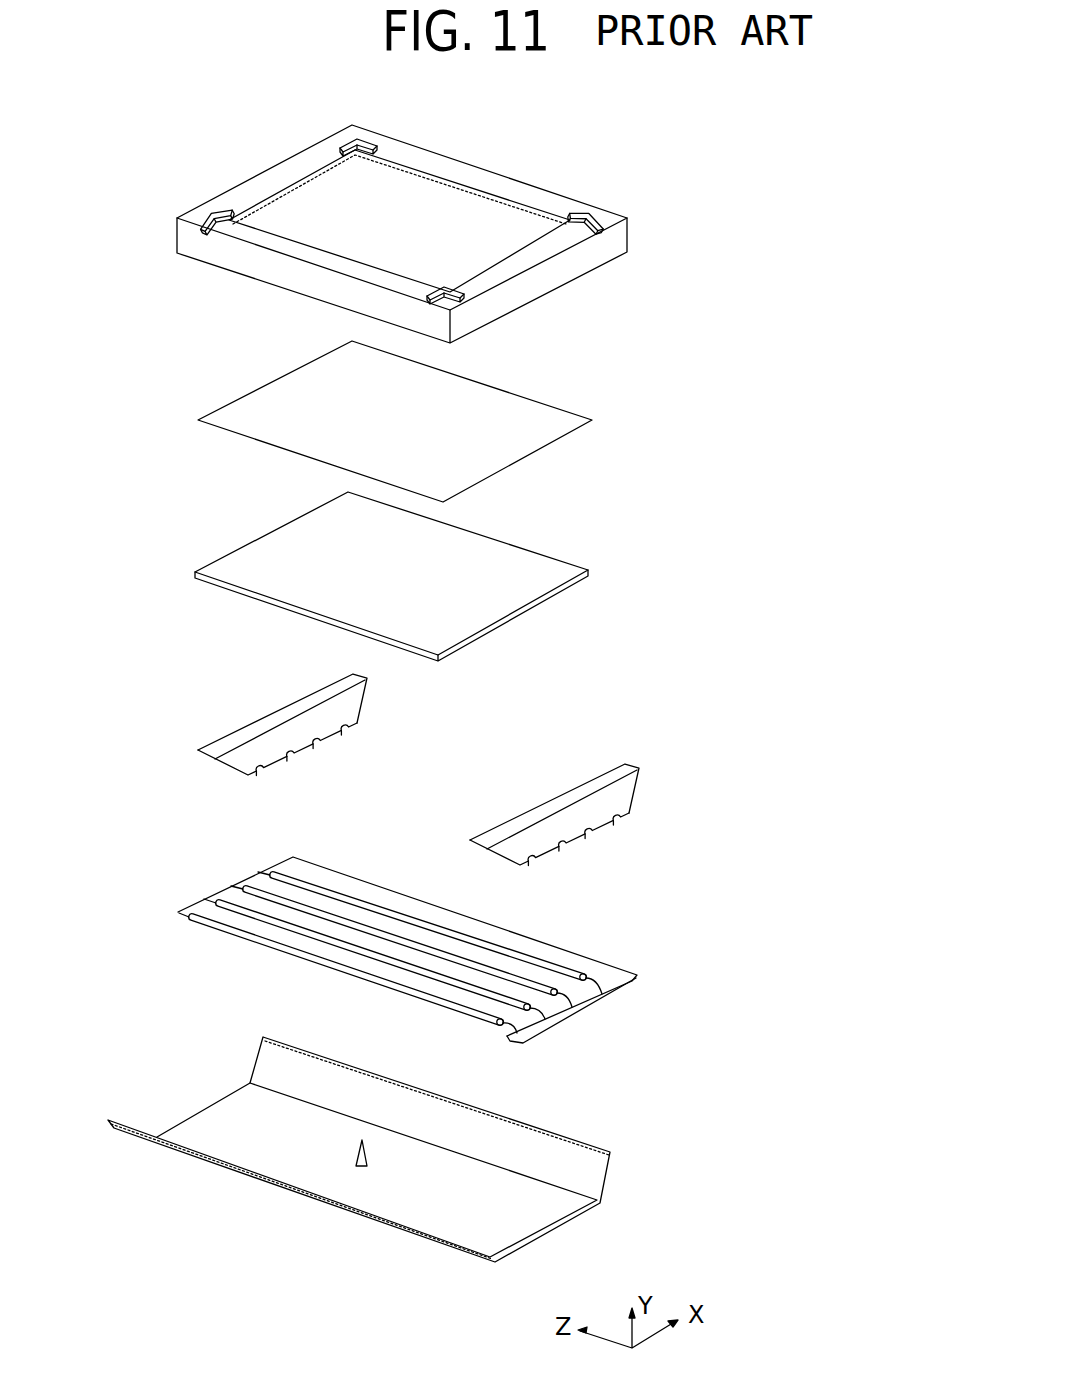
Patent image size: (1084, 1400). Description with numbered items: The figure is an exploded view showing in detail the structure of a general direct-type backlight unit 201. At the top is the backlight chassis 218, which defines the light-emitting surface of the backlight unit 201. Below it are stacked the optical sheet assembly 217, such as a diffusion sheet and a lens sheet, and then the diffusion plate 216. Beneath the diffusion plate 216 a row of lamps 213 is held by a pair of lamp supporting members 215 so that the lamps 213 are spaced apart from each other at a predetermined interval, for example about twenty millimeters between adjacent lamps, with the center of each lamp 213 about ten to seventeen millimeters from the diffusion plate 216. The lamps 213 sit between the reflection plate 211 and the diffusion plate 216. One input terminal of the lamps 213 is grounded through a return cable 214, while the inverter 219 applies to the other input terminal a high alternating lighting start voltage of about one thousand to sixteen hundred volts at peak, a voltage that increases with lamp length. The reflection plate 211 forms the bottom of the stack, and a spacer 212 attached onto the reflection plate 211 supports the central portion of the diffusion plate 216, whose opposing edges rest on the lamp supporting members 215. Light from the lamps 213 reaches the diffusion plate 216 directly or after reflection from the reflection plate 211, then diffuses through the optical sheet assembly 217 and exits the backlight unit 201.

The backlight unit 201 is at (125, 157).
The reflection plate 211 is at (553, 1228).
The spacer 212 is at (352, 1157).
The lamps 213 is at (193, 930).
The return cable 214 is at (545, 943).
The lamp supporting members 215 is at (548, 800).
The diffusion plate 216 is at (547, 558).
The optical sheet assembly 217 is at (545, 403).
The backlight chassis 218 is at (540, 200).
The inverter 219 is at (577, 1015).